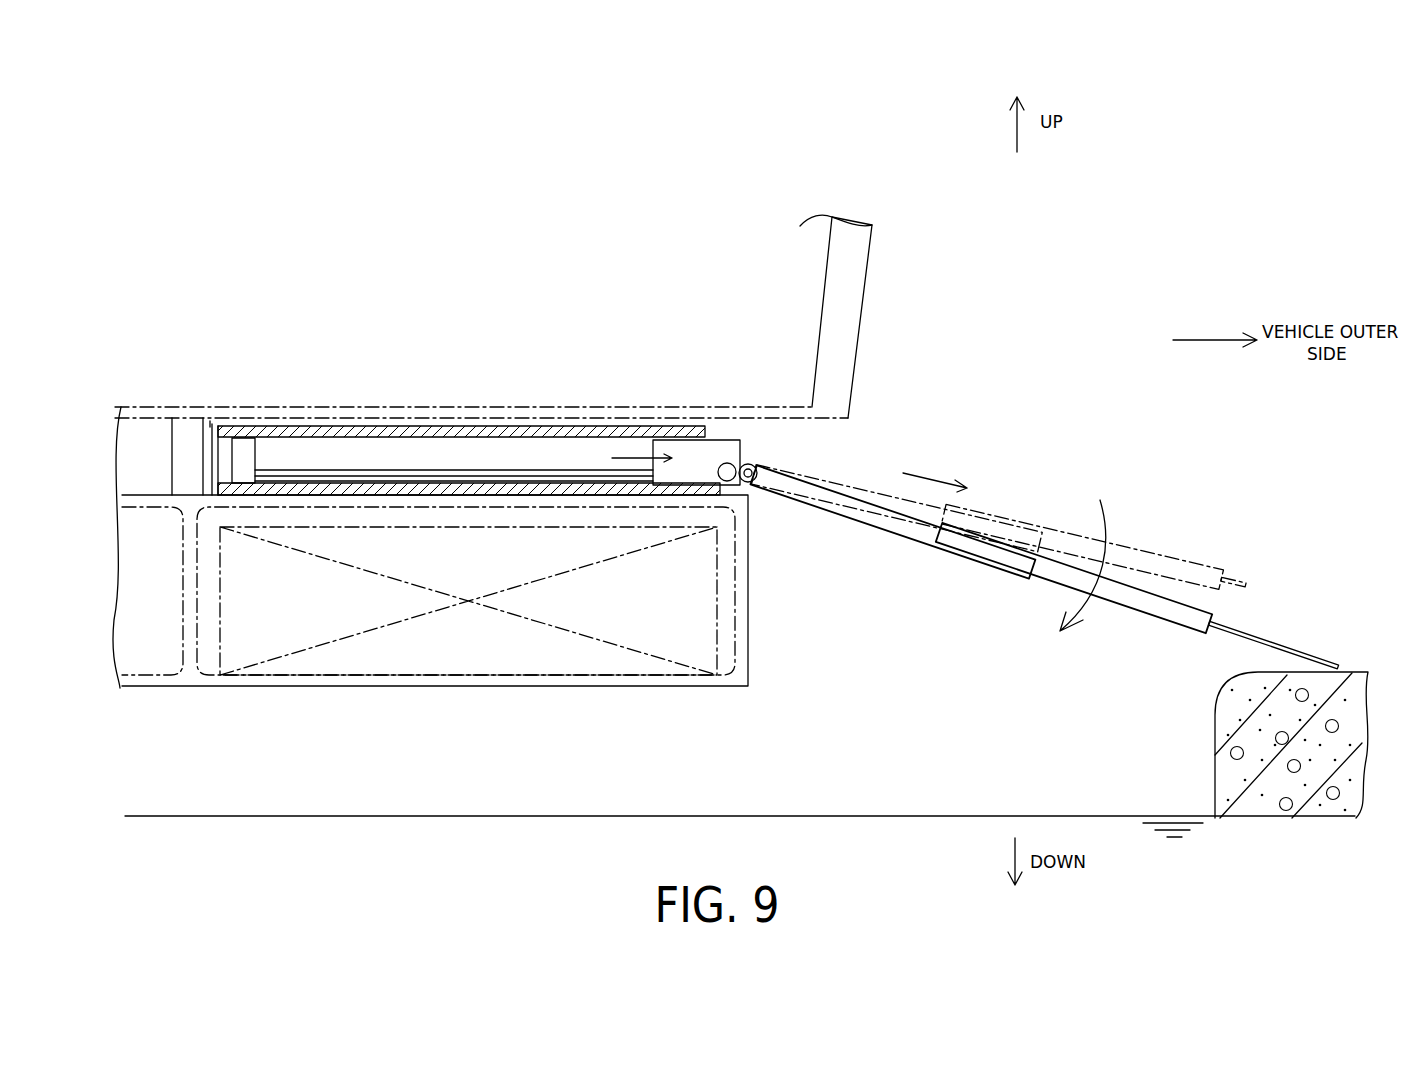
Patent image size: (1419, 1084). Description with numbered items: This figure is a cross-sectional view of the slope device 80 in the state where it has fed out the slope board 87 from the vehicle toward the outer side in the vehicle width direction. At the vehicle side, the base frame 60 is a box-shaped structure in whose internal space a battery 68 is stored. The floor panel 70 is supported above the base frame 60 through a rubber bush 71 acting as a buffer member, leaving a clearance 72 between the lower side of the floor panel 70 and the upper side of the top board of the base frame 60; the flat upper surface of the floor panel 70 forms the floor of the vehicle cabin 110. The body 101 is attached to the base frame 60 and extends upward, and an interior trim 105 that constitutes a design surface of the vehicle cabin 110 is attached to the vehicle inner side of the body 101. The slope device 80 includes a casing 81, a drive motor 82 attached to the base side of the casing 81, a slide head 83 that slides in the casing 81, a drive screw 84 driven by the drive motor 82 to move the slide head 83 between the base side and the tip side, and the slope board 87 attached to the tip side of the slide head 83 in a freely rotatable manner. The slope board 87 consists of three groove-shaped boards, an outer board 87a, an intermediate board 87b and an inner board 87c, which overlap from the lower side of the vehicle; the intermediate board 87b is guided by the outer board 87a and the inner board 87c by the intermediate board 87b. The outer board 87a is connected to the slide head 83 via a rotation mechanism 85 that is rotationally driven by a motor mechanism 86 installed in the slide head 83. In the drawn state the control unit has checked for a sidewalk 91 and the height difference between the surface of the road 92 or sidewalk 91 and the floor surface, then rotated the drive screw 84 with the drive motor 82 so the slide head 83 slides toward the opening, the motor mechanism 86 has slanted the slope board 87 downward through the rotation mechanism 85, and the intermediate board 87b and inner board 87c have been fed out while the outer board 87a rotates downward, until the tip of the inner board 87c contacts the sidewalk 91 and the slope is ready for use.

The vehicle cabin 110 is at (571, 137).
The floor panel 70 is at (493, 392).
The rubber bush 71 is at (172, 440).
The clearance 72 is at (210, 420).
The slope device 80 is at (421, 407).
The casing 81 is at (360, 427).
The drive motor 82 is at (305, 428).
The slide head 83 is at (722, 438).
The drive screw 84 is at (572, 468).
The rotation mechanism 85 is at (749, 466).
The motor mechanism 86 is at (750, 497).
The slope board 87 is at (1044, 596).
The outer board 87a is at (907, 538).
The intermediate board 87b is at (1041, 587).
The inner board 87c is at (1220, 647).
The base frame 60 is at (423, 690).
The battery 68 is at (210, 690).
The sidewalk 91 is at (1353, 672).
The road 92 is at (885, 816).
The body 101 is at (868, 308).
The interior trim 105 is at (825, 298).